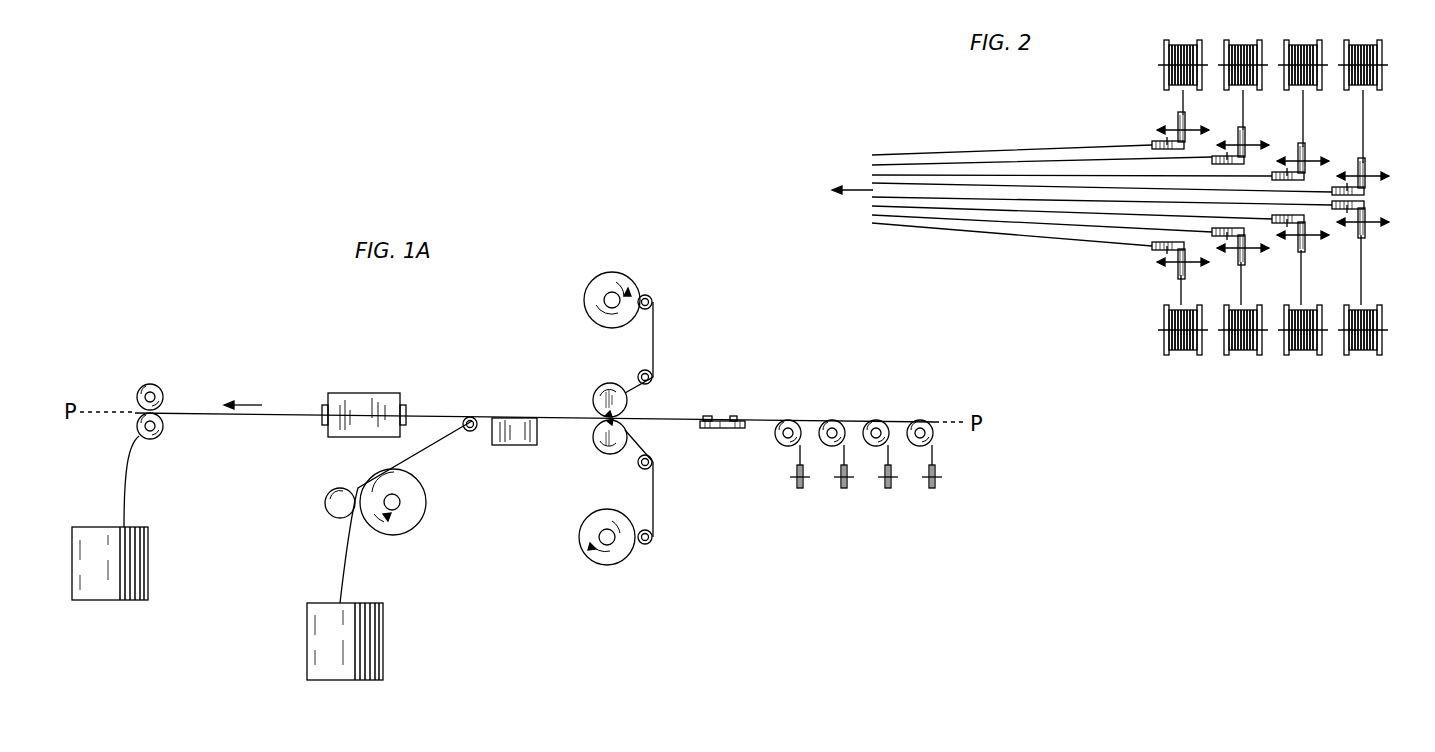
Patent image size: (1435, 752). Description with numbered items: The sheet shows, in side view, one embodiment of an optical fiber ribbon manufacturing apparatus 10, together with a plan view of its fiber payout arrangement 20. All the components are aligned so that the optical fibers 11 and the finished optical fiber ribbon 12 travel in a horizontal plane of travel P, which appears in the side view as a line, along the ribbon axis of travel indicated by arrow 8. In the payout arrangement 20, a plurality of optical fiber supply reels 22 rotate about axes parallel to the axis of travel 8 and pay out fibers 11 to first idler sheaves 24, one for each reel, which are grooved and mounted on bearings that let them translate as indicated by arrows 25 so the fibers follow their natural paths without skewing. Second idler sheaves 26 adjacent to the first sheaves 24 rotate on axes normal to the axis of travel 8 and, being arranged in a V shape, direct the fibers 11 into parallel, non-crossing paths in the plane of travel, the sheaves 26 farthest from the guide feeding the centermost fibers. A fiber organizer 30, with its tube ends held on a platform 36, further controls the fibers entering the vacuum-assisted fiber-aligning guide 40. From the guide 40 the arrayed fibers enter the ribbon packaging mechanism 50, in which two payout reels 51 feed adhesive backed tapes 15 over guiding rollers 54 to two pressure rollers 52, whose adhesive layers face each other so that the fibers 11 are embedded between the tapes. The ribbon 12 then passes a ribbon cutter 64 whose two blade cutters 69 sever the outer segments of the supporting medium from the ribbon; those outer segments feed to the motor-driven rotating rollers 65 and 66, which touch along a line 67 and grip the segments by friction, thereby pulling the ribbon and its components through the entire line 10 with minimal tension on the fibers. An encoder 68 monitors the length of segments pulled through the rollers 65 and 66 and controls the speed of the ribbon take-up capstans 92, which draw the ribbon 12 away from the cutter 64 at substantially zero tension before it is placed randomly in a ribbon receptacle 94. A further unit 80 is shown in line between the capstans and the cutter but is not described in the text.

In FIG. 1A, the ribbon axis of travel 8 is at (254, 404).
In FIG. 2, the ribbon axis of travel 8 is at (854, 184).
In FIG. 1A, the optical fiber ribbon manufacturing apparatus 10 is at (502, 593).
In FIG. 2, the optical fibers 11 is at (951, 175).
In FIG. 1A, the optical fiber ribbon 12 is at (274, 412).
In FIG. 1A, the adhesive backed tapes 15 is at (654, 330).
In FIG. 2, the optical fiber payout arrangement 20 is at (1278, 397).
In FIG. 2, the optical fiber supply reels 22 is at (1244, 40).
In FIG. 1A, the first idler sheaves 24 is at (795, 477).
In FIG. 2, the first idler sheaves 24 is at (1300, 154).
In FIG. 2, the arrows 25 is at (1176, 129).
In FIG. 1A, the second idler sheaves 26 is at (832, 420).
In FIG. 2, the second idler sheaves 26 is at (1150, 142).
In FIG. 1A, the fiber organizer 30 is at (736, 416).
In FIG. 1A, the platform 36 is at (722, 430).
In FIG. 1A, the vacuum-assisted fiber-aligning guide 40 is at (706, 416).
In FIG. 1A, the ribbon packaging mechanism 50 is at (585, 290).
In FIG. 1A, the payout reels 51 is at (615, 283).
In FIG. 1A, the pressure rollers 52 is at (597, 396).
In FIG. 1A, the guiding rollers 54 is at (649, 295).
In FIG. 1A, the ribbon cutter 64 is at (513, 447).
In FIG. 1A, the rotating roller 65 is at (406, 526).
In FIG. 1A, the rotating roller 66 is at (338, 513).
In FIG. 1A, the line 67 is at (357, 493).
In FIG. 1A, the encoder 68 is at (400, 503).
In FIG. 1A, the blade cutters 69 is at (513, 415).
In FIG. 1A, the heater 80 is at (366, 399).
In FIG. 1A, the ribbon take-up capstans 92 is at (158, 386).
In FIG. 1A, the ribbon receptacle 94 is at (150, 547).